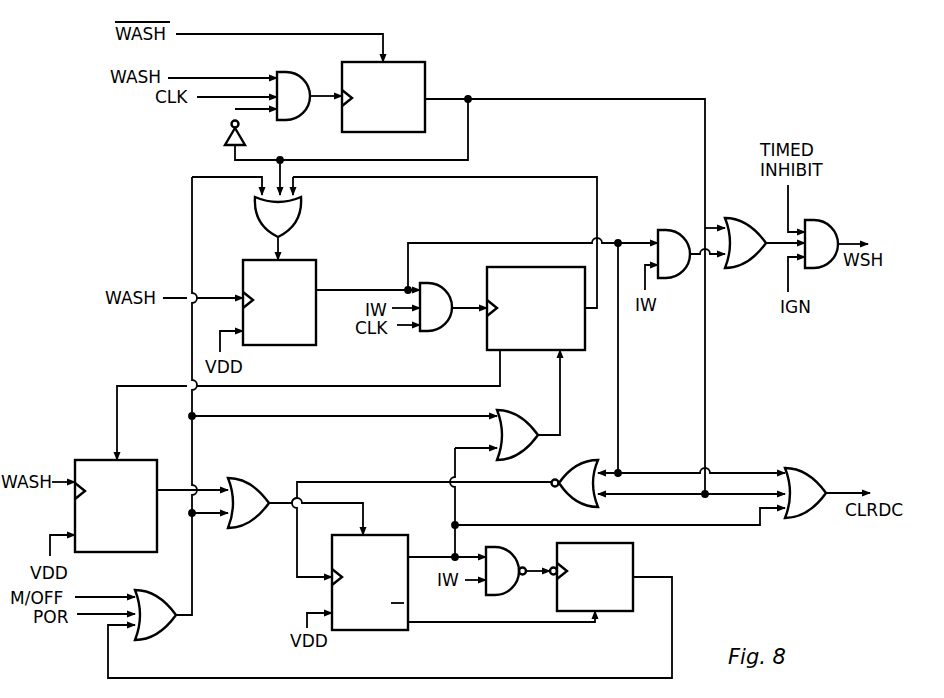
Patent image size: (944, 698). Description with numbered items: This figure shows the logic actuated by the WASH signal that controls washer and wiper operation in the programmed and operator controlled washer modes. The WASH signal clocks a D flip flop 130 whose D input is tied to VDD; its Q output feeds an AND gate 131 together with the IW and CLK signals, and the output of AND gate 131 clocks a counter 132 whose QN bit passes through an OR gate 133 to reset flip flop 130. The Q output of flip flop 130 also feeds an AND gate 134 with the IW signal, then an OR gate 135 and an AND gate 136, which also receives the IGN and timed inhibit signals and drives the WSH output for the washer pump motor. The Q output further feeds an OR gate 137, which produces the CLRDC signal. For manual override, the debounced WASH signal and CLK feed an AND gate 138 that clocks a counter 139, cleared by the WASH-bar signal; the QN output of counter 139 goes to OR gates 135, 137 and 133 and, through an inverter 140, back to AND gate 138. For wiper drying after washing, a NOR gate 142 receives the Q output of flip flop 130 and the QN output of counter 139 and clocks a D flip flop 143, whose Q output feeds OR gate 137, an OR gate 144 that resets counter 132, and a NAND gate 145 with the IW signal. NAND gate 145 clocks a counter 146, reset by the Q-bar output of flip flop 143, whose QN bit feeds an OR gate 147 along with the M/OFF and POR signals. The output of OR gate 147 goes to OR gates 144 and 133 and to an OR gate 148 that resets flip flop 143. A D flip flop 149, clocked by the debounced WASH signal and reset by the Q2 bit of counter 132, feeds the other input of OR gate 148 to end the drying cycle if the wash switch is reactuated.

The D flip flop 130 is at (300, 335).
The AND gate 131 is at (437, 302).
The counter 132 is at (488, 330).
The OR gate 133 is at (290, 223).
The AND gate 134 is at (672, 240).
The OR gate 135 is at (738, 260).
The AND gate 136 is at (822, 232).
The OR gate 137 is at (805, 506).
The AND gate 138 is at (298, 88).
The counter 139 is at (412, 76).
The inverter 140 is at (222, 138).
The NOR gate 142 is at (578, 470).
The D flip flop 143 is at (370, 618).
The OR gate 144 is at (522, 436).
The NAND gate 145 is at (494, 585).
The counter 146 is at (622, 603).
The OR gate 147 is at (152, 620).
The OR gate 148 is at (250, 490).
The D flip flop 149 is at (95, 468).